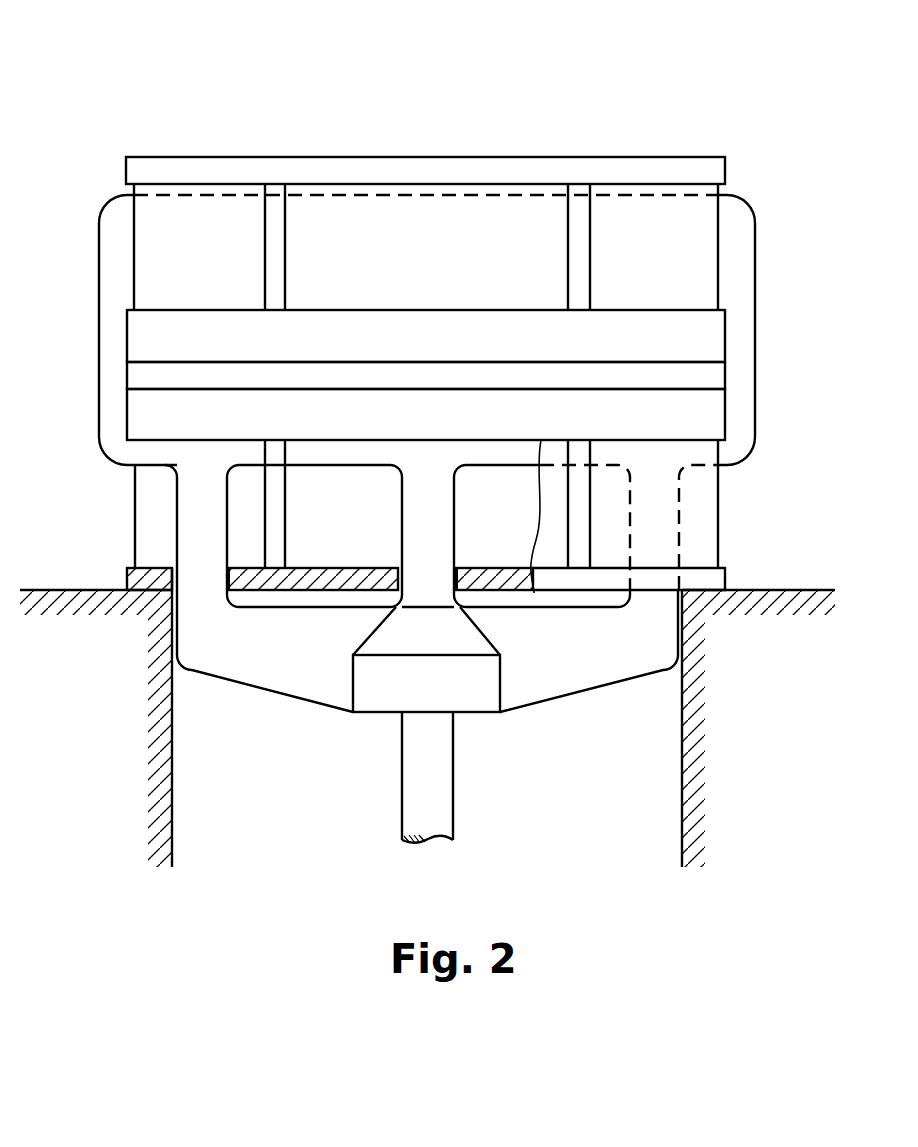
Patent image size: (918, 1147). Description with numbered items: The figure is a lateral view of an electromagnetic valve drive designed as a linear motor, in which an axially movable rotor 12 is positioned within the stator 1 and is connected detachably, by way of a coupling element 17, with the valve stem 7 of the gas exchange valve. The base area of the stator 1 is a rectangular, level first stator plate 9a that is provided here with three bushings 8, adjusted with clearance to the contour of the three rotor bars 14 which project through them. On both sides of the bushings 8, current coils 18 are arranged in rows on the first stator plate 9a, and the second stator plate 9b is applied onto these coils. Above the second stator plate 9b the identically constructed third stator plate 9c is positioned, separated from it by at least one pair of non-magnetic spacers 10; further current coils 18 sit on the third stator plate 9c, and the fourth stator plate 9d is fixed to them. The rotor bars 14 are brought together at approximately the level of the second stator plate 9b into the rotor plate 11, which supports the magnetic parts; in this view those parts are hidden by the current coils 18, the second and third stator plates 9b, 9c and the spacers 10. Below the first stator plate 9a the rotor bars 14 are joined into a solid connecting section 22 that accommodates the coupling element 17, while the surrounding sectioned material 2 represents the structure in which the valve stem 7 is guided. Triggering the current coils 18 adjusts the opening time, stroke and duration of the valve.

The stator 1 is at (158, 157).
The ground / foundation 2 is at (776, 684).
The valve stem 7 is at (440, 800).
The bushing 8 is at (452, 578).
The first stator plate 9a is at (705, 583).
The second stator plate 9b is at (705, 410).
The third stator plate 9c is at (705, 342).
The fourth stator plate 9d is at (705, 165).
The non-magnetic spacers 10 is at (175, 375).
The rotor plate 11 is at (99, 338).
The rotor 12 is at (104, 200).
The rotor bar 14 is at (172, 513).
The coupling element 17 is at (387, 693).
The current coils 18 is at (315, 205).
The connecting section 22 is at (247, 652).